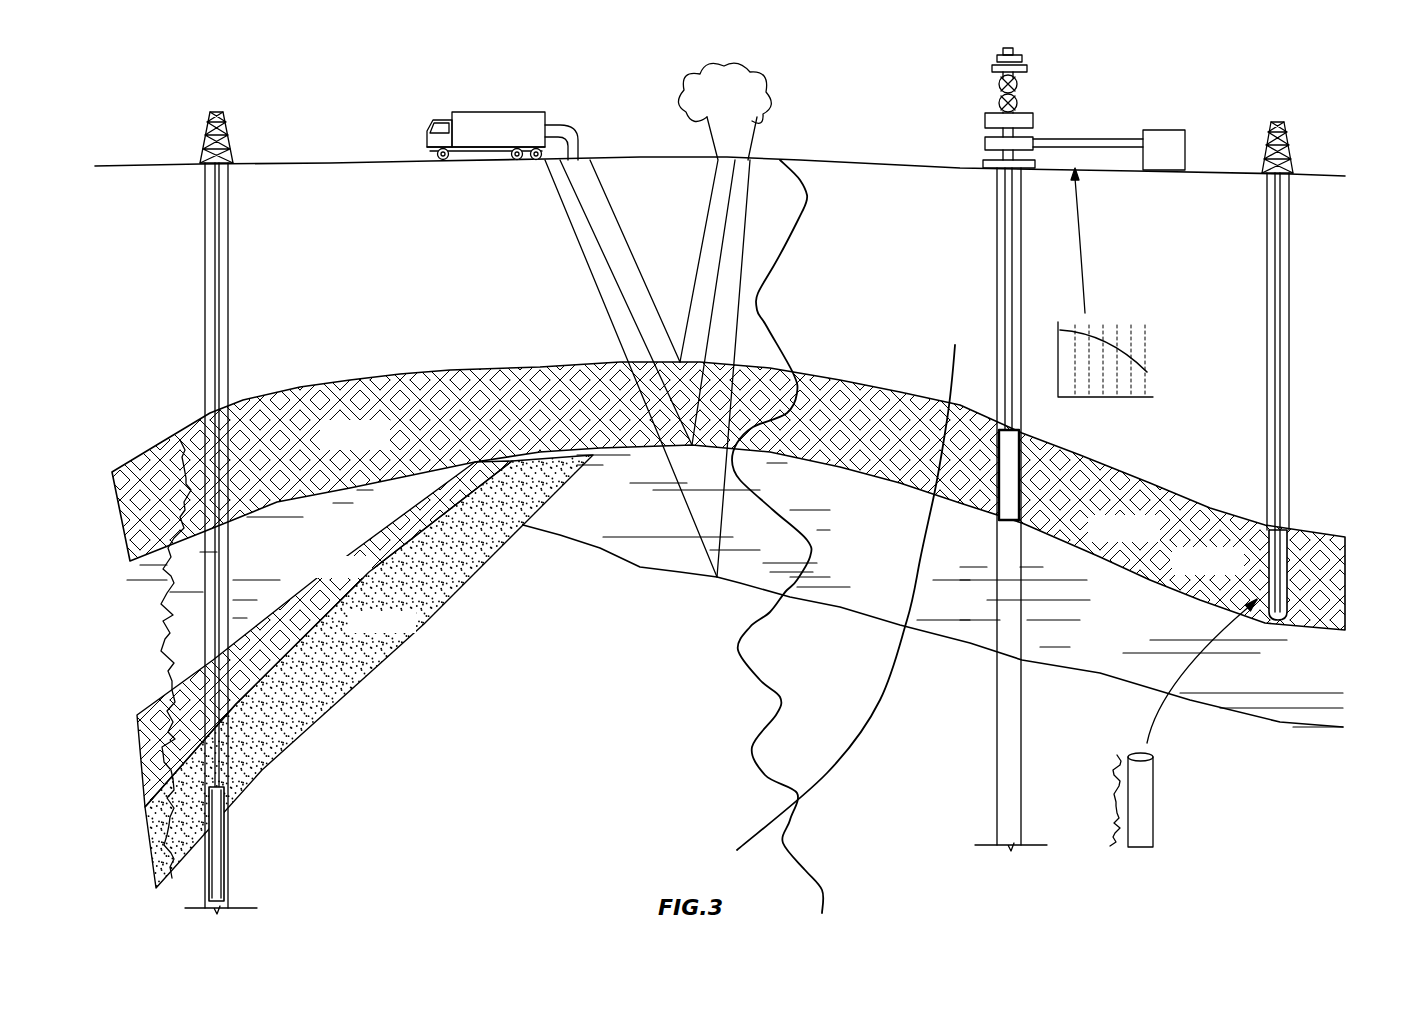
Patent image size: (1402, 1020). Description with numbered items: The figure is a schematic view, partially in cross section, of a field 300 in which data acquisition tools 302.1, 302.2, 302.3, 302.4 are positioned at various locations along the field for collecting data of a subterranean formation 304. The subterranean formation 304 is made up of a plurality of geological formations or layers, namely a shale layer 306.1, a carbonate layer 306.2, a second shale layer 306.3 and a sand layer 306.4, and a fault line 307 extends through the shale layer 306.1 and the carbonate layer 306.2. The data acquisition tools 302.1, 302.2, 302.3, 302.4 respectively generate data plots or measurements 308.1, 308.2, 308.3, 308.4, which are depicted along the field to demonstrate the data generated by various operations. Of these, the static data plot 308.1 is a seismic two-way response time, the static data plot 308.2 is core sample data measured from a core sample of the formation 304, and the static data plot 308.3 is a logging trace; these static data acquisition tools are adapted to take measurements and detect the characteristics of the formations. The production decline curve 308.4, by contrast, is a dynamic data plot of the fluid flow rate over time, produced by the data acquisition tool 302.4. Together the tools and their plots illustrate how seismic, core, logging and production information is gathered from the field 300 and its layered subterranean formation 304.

The field 300 is at (1212, 110).
The data acquisition tool 302.1 is at (458, 112).
The data acquisition tool 302.2 is at (1282, 563).
The data acquisition tool 302.3 is at (229, 848).
The data acquisition tool 302.4 is at (1018, 510).
The subterranean formation 304 is at (582, 671).
The shale layer 306.1 is at (385, 447).
The carbonate layer 306.2 is at (660, 537).
The shale layer 306.3 is at (369, 579).
The sand layer 306.4 is at (413, 635).
The fault line 307 is at (945, 352).
The static data plot 308.1 is at (777, 703).
The static data plot 308.2 is at (1117, 767).
The static data plot 308.3 is at (167, 653).
The production decline curve 308.4 is at (1113, 398).